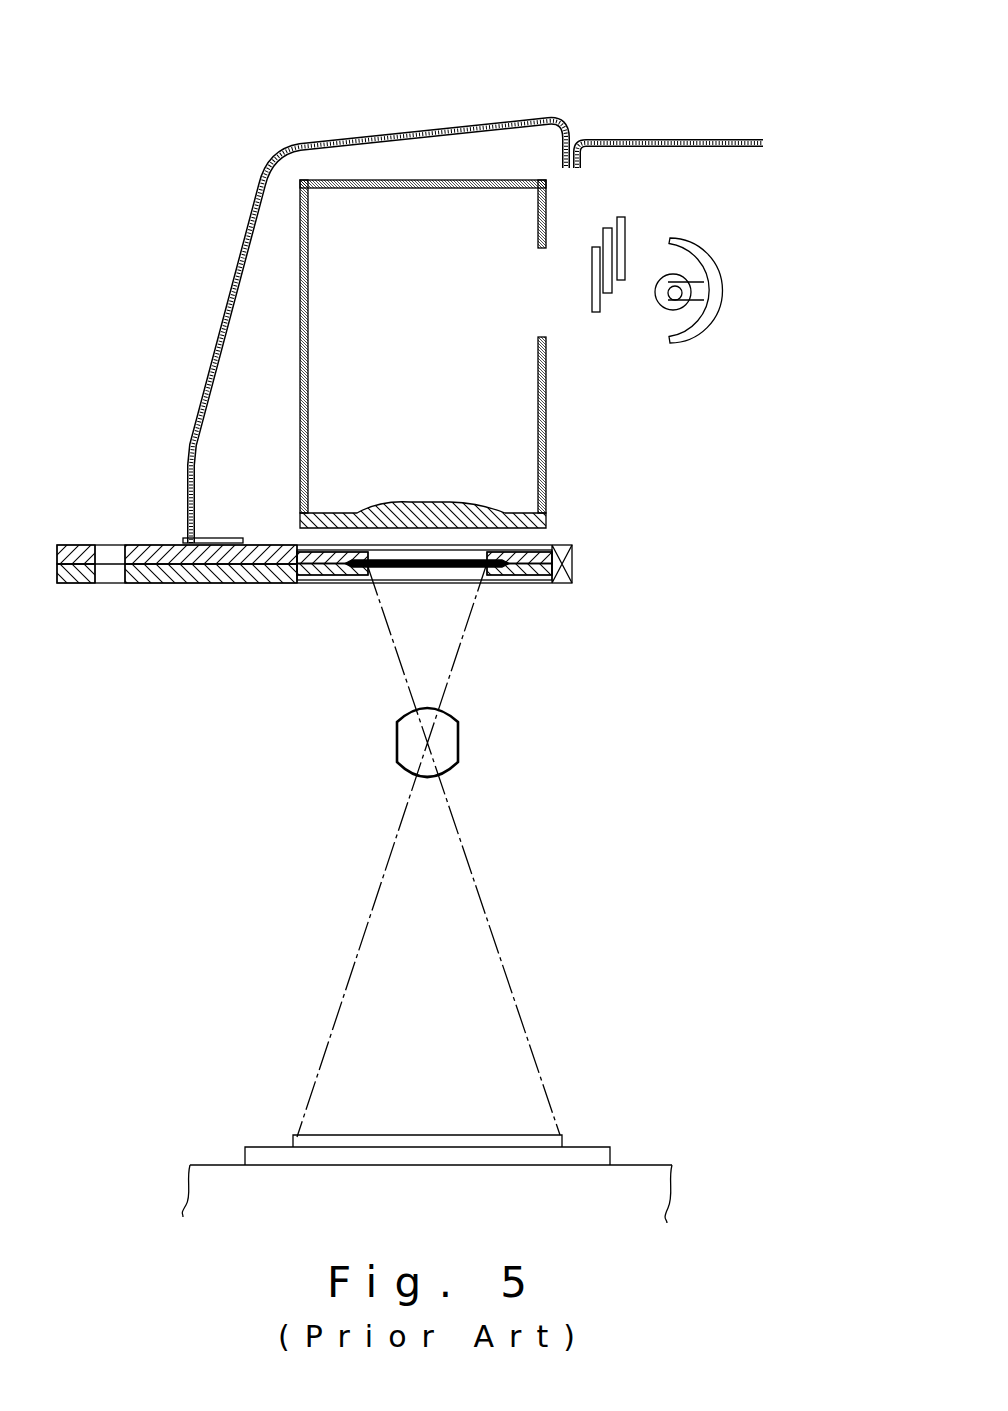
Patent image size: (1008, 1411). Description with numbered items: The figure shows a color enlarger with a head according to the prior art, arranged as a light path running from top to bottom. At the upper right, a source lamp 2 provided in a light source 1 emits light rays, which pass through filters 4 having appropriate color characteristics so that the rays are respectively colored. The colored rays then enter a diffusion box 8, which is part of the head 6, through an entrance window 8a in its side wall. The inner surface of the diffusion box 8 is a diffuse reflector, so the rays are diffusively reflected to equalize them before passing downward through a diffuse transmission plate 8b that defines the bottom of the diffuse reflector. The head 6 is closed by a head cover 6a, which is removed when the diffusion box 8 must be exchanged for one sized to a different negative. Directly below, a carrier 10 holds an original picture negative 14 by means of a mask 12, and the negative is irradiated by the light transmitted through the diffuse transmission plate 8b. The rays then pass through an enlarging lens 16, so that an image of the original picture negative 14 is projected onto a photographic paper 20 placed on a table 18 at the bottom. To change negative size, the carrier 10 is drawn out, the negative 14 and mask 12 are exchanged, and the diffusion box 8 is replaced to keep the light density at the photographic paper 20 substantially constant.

The light source 1 is at (640, 118).
The source lamp 2 is at (667, 360).
The filters 4 is at (635, 203).
The head 6 is at (203, 268).
The head cover 6a is at (380, 130).
The diffusion box 8 is at (377, 366).
The entrance window 8a is at (542, 335).
The diffuse transmission plate 8b is at (497, 543).
The carrier 10 is at (160, 577).
The mask 12 is at (317, 597).
The original picture negative 14 is at (450, 567).
The enlarging lens 16 is at (403, 747).
The table 18 is at (215, 1178).
The photographic paper 20 is at (507, 1140).